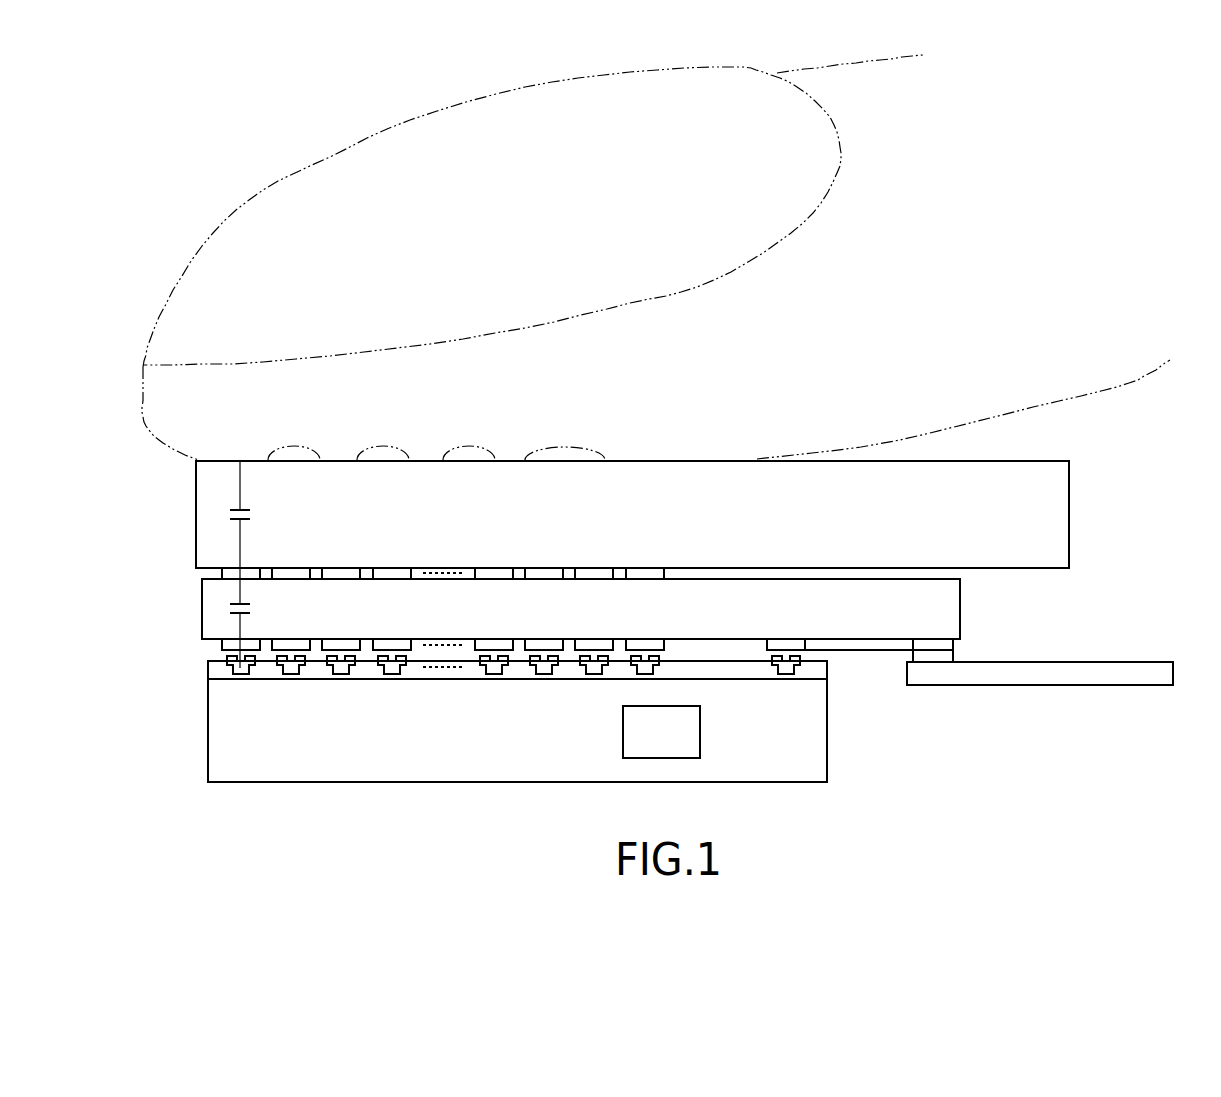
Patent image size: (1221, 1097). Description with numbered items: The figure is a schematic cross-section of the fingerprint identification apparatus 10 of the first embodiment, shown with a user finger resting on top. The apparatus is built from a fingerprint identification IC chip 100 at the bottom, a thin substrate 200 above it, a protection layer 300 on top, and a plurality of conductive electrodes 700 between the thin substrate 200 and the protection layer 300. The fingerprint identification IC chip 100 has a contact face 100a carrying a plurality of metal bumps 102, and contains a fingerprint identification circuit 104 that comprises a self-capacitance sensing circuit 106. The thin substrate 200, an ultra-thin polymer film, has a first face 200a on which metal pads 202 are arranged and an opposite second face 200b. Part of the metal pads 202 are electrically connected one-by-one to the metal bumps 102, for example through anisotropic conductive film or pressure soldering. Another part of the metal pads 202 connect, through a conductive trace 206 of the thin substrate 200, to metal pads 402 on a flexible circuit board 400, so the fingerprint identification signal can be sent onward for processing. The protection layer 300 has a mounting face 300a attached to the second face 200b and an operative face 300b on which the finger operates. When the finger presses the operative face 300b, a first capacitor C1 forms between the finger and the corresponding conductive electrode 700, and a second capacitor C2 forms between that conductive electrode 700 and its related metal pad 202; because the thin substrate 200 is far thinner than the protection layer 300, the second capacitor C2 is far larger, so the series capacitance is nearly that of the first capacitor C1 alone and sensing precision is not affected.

The fingerprint identification apparatus 10 is at (1153, 432).
The fingerprint identification IC chip 100 is at (827, 725).
The contact face 100a is at (208, 662).
The metal bumps 102 is at (238, 674).
The fingerprint identification circuit 104 is at (417, 770).
The self-capacitance sensing circuit 106 is at (662, 750).
The thin substrate 200 is at (960, 608).
The first face 200a is at (203, 640).
The second face 200b is at (203, 580).
The metal pads 202 is at (238, 643).
The conductive trace 206 is at (860, 645).
The protection layer 300 is at (1069, 513).
The mounting face 300a is at (213, 577).
The operative face 300b is at (197, 460).
The flexible circuit board 400 is at (1085, 676).
The metal pads 402 is at (945, 656).
The conductive electrodes 700 is at (204, 564).
The first capacitor C1 is at (255, 515).
The second capacitor C2 is at (255, 609).